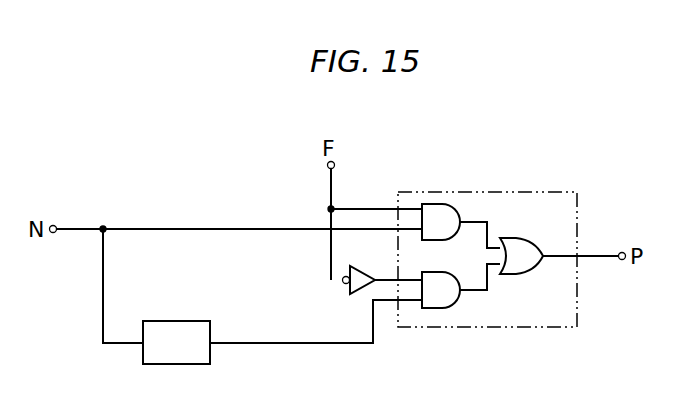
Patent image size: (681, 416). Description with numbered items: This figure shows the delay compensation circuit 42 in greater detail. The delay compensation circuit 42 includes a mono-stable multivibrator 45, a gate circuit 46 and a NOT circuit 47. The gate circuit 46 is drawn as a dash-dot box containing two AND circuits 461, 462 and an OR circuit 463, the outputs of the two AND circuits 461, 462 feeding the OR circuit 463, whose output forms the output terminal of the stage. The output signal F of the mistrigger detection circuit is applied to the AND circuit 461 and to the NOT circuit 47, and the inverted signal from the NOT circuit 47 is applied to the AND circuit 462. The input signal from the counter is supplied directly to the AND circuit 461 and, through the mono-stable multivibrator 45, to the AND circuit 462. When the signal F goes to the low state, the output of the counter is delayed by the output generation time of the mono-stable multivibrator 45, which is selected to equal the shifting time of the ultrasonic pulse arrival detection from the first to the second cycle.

The delay compensation circuit 42 is at (410, 373).
The mono-stable multivibrator 45 is at (184, 356).
The gate circuit 46 is at (574, 192).
The NOT circuit 47 is at (360, 279).
The AND circuit 461 is at (450, 217).
The AND circuit 462 is at (440, 280).
The OR circuit 463 is at (528, 248).